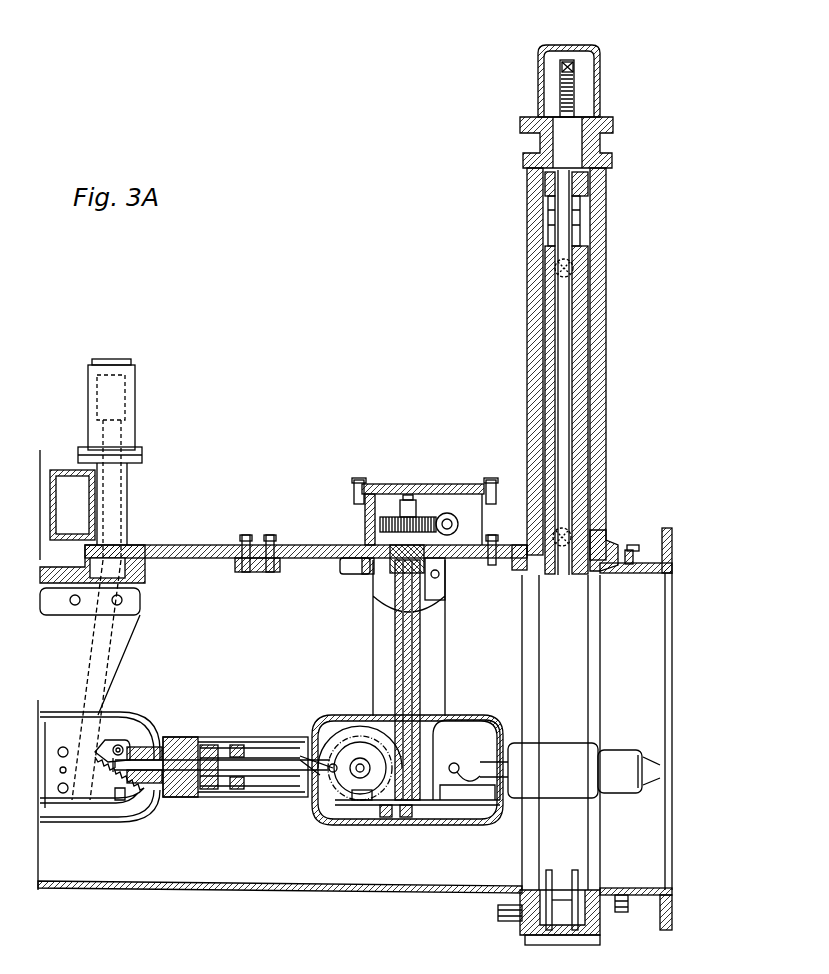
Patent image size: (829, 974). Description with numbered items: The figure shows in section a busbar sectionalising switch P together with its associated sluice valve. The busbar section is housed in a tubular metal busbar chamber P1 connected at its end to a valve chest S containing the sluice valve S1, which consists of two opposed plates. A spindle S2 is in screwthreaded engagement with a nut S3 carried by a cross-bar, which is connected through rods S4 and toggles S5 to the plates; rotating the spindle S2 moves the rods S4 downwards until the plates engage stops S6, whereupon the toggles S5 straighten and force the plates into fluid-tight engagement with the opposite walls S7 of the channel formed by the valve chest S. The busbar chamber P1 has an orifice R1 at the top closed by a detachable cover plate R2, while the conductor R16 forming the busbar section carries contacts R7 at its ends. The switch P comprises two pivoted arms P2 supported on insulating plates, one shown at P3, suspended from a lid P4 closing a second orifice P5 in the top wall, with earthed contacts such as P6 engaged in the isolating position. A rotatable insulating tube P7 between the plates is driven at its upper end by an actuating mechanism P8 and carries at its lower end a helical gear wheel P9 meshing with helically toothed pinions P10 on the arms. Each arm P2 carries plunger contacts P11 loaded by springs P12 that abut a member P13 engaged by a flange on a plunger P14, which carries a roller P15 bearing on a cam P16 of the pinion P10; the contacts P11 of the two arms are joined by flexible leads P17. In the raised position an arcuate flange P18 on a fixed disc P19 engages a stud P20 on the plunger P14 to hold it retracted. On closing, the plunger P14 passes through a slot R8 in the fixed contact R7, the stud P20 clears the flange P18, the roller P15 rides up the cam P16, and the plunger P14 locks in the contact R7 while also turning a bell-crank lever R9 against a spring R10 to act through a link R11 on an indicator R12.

The valve chest S is at (545, 242).
The sluice valve S1 is at (578, 397).
The spindle S2 is at (570, 146).
The nut S3 is at (585, 182).
The rods S4 is at (572, 368).
The toggles S5 is at (590, 264).
The stops S6 is at (575, 870).
The walls of channel S7 is at (596, 670).
The busbar sectionalising switch P is at (345, 692).
The busbar chamber P1 is at (243, 884).
The pivoted arms P2 is at (296, 742).
The insulating plate P3 is at (430, 648).
The lid P4 is at (302, 545).
The second orifice P5 is at (270, 570).
The earthed contact P6 is at (360, 575).
The rotatable insulating tube P7 is at (415, 697).
The actuating mechanism P8 is at (412, 520).
The helical gear wheel P9 is at (438, 805).
The helically toothed pinions P10 is at (392, 818).
The plunger contacts P11 is at (172, 742).
The springs P12 is at (218, 742).
The abutment member P13 is at (230, 797).
The plunger P14 is at (258, 790).
The roller P15 is at (348, 806).
The cam P16 is at (362, 800).
The flexible leads P17 is at (470, 805).
The arcuate flange P18 is at (335, 728).
The fixed disc P19 is at (355, 735).
The stud P20 is at (333, 775).
The orifice R1 is at (235, 572).
The cover plate R2 is at (183, 548).
The contacts R7 is at (160, 790).
The slot R8 is at (152, 745).
The bell-crank lever R9 is at (102, 750).
The spring R10 is at (128, 798).
The link R11 is at (100, 638).
The indicator R12 is at (120, 400).
The conductor R16 is at (68, 805).